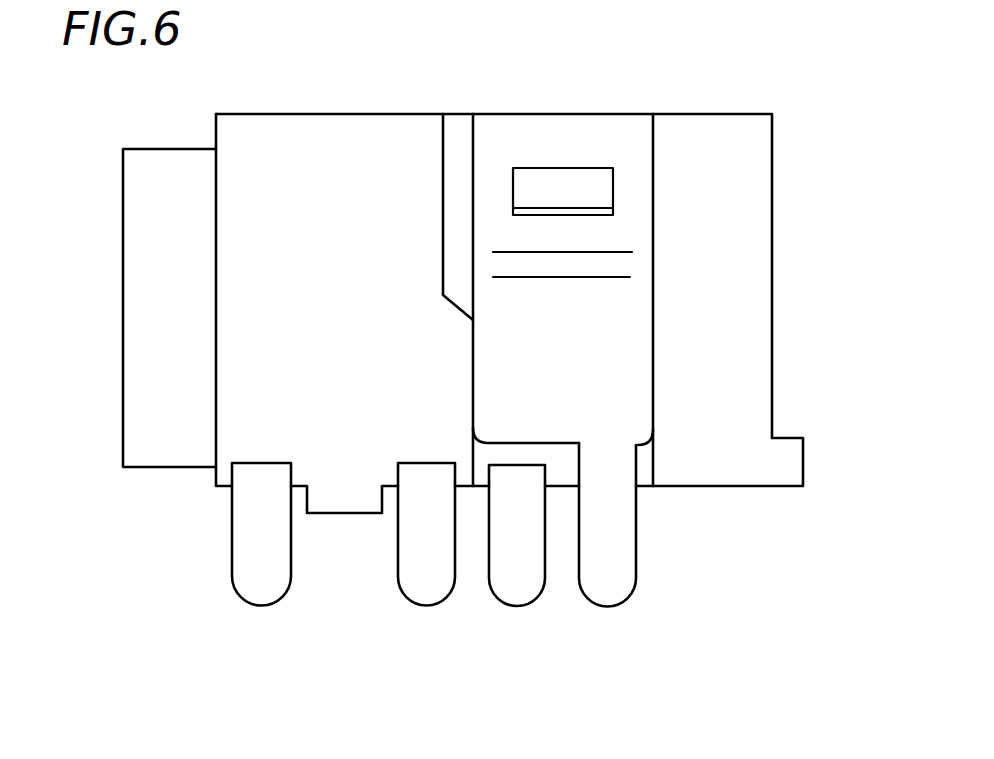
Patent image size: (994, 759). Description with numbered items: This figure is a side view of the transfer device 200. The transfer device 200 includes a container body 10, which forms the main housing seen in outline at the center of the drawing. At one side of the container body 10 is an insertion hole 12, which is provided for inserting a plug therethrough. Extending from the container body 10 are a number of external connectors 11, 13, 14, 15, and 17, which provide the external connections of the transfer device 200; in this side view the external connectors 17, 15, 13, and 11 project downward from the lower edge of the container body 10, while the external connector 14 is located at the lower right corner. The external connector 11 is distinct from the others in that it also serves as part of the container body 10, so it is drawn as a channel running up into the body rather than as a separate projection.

The transfer device 200 is at (746, 599).
The container body 10 is at (243, 448).
The insertion hole 12 is at (113, 300).
The external connector 14 is at (785, 448).
The external connector 17 is at (238, 568).
The external connector 15 is at (404, 577).
The external connector 13 is at (537, 587).
The external connector 11 is at (627, 580).